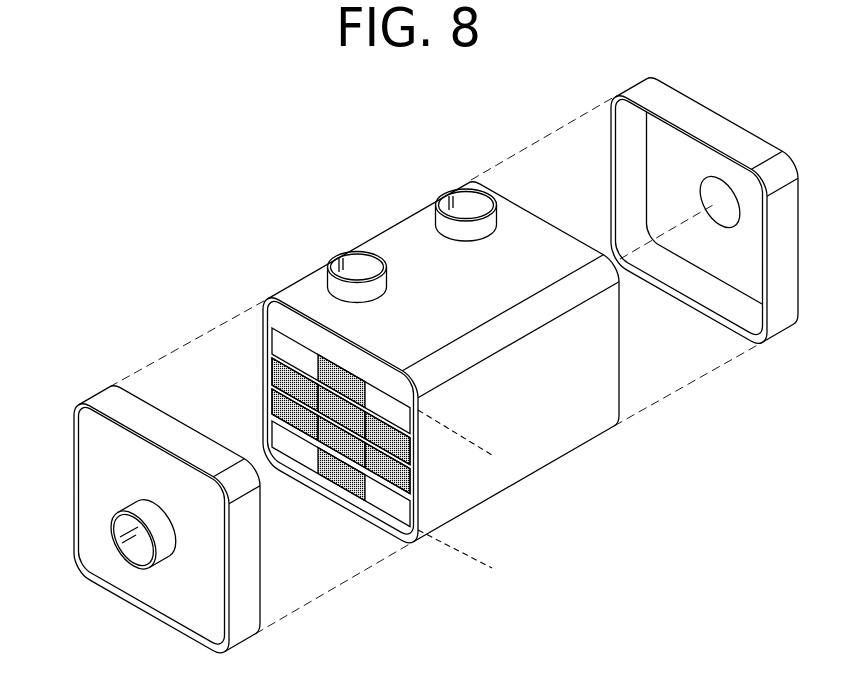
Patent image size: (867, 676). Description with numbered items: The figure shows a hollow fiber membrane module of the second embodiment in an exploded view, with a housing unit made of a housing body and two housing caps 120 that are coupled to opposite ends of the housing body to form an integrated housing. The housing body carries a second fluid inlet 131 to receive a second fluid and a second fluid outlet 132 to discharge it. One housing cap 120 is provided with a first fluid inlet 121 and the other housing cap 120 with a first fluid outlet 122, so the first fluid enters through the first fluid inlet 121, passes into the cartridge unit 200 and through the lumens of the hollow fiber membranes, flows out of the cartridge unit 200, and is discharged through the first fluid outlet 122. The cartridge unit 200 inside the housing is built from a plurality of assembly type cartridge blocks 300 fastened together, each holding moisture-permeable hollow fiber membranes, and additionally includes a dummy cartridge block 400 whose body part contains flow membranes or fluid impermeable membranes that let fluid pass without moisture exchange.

The housing cap 120 is at (620, 160).
The first fluid inlet 121 is at (716, 184).
The first fluid outlet 122 is at (140, 550).
The second fluid inlet 131 is at (353, 267).
The second fluid outlet 132 is at (465, 203).
The cartridge unit 200 is at (492, 455).
The assembly type cartridge block 300 is at (341, 474).
The dummy cartridge block 400 is at (383, 500).